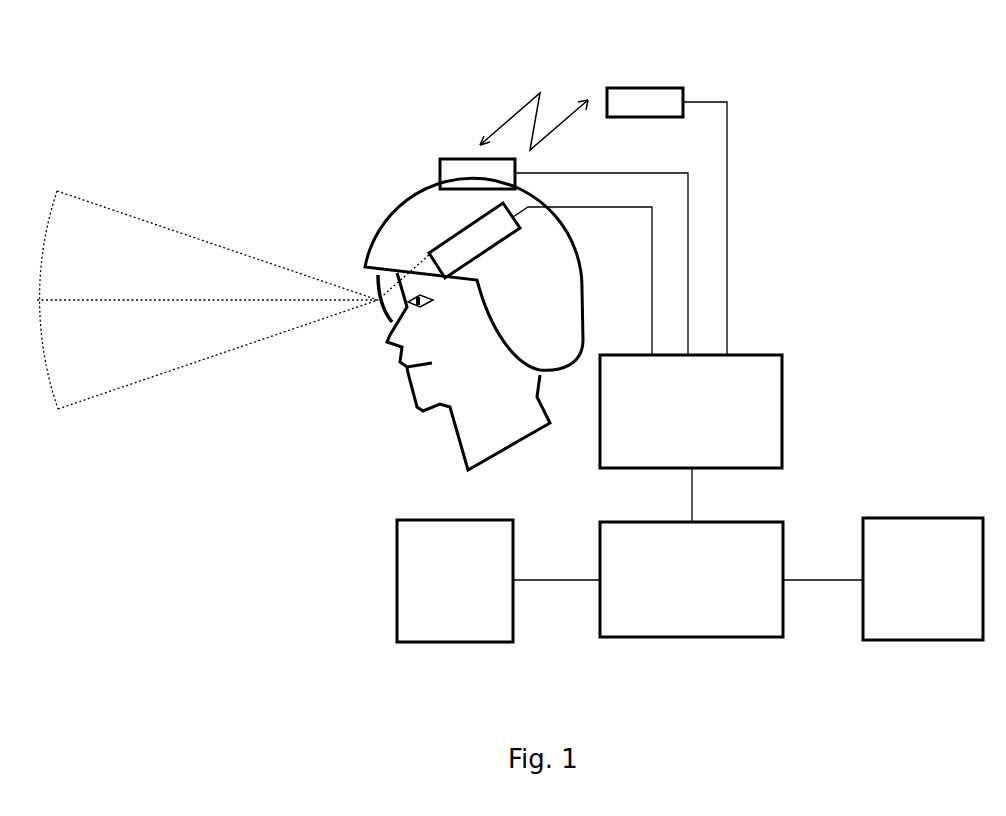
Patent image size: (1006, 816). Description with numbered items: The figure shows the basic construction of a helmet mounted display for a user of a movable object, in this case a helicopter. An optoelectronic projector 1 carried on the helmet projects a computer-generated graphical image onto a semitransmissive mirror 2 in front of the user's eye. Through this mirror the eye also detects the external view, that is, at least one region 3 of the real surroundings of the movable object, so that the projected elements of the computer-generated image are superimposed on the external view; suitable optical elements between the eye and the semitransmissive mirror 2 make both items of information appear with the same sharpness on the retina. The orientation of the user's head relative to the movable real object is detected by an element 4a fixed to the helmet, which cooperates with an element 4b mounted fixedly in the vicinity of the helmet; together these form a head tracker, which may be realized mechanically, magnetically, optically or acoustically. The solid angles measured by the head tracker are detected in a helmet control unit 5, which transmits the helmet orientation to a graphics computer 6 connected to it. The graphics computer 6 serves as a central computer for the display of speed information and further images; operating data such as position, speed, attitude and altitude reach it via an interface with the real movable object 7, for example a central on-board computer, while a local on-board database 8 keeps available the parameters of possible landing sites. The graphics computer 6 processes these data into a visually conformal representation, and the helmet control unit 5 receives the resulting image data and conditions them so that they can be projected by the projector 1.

The optoelectronic projector 1 is at (492, 258).
The semitransmissive mirror 2 is at (380, 317).
The region of the real surroundings 3 is at (233, 300).
The element fixed to the helmet 4a is at (463, 150).
The element mounted fixedly in the vicinity of the helmet 4b is at (630, 78).
The helmet control unit 5 is at (691, 438).
The graphics computer 6 is at (688, 579).
The real movable object 7 is at (455, 581).
The local on-board database 8 is at (923, 579).